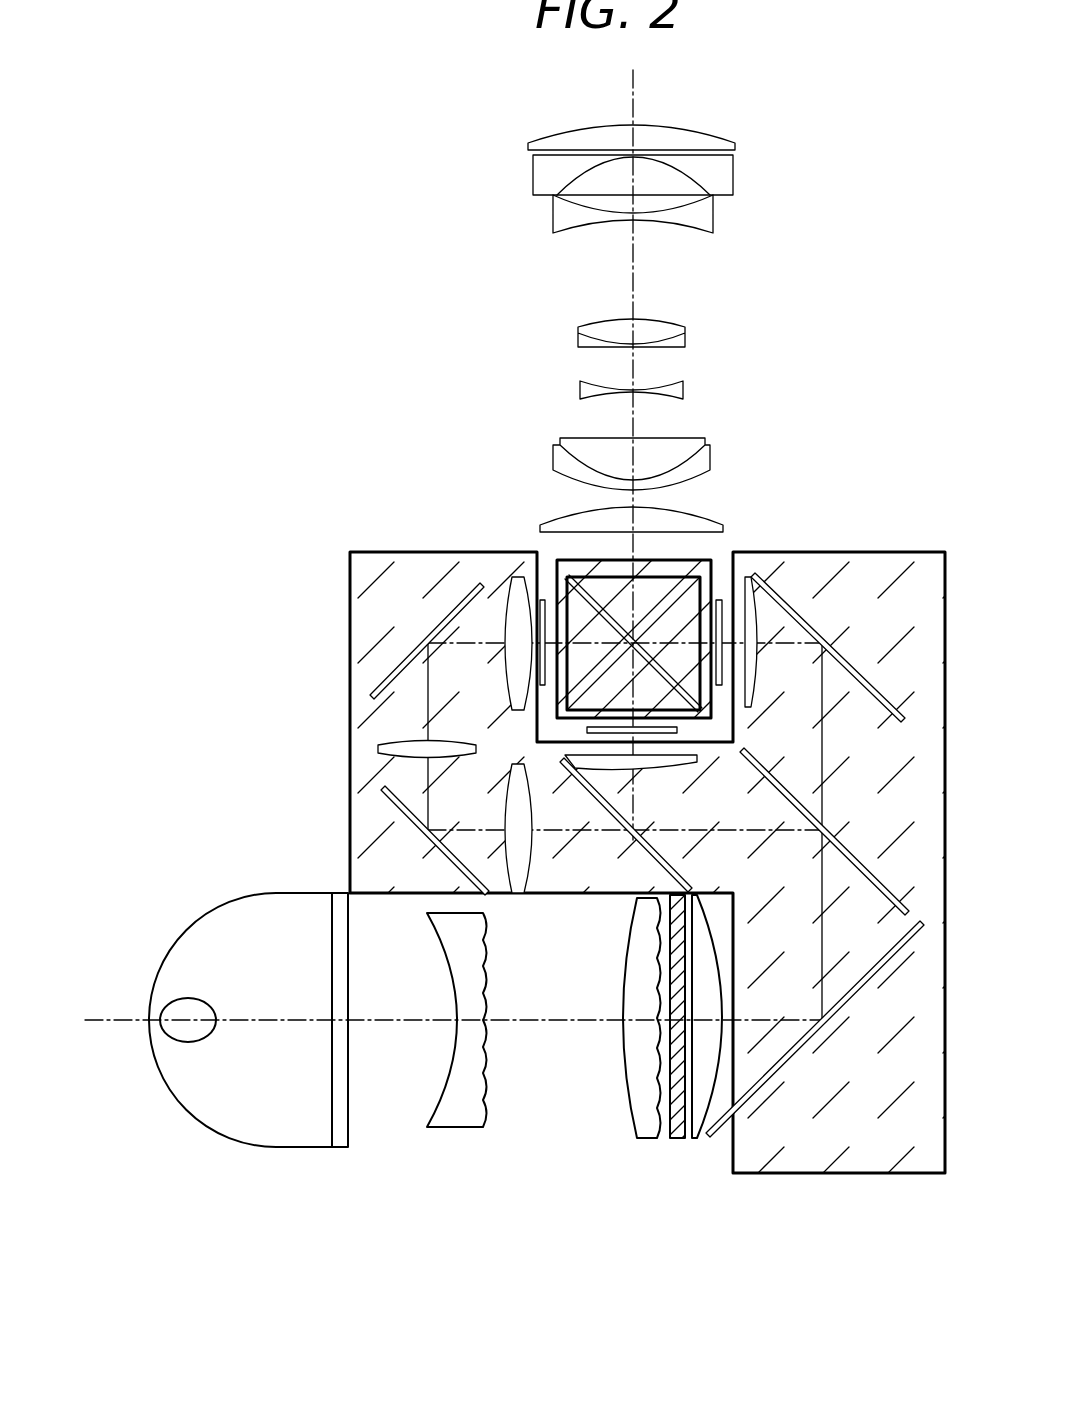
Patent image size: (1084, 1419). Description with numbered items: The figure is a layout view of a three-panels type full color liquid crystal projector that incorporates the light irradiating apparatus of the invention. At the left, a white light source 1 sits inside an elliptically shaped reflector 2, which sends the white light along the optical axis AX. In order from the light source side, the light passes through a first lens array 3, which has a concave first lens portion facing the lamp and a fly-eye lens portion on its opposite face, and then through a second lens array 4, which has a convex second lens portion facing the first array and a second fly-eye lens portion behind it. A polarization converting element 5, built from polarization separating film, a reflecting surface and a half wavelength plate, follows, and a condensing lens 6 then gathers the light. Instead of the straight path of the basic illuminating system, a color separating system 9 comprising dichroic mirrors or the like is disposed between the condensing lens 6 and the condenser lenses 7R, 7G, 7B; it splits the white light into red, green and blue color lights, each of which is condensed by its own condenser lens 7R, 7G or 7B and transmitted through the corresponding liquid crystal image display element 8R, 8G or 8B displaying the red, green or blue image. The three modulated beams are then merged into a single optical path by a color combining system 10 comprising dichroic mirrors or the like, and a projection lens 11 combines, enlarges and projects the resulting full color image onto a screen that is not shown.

The white light source 1 is at (178, 1040).
The elliptically shaped reflector 2 is at (236, 905).
The first lens array 3 is at (453, 1122).
The second lens array 4 is at (640, 1140).
The polarization converting element 5 is at (675, 1140).
The condensing lens 6 is at (695, 1142).
The condenser lens for red light 7R is at (508, 578).
The condenser lens for green light 7G is at (692, 752).
The condenser lens for blue light 7B is at (757, 577).
The liquid crystal image display element for red 8R is at (541, 598).
The liquid crystal image display element for green 8G is at (586, 731).
The liquid crystal image display element for blue 8B is at (719, 598).
The color separating system 9 is at (813, 1162).
The color combining system 10 is at (702, 553).
The projection lens 11 is at (523, 533).
The optical axis AX is at (553, 1025).